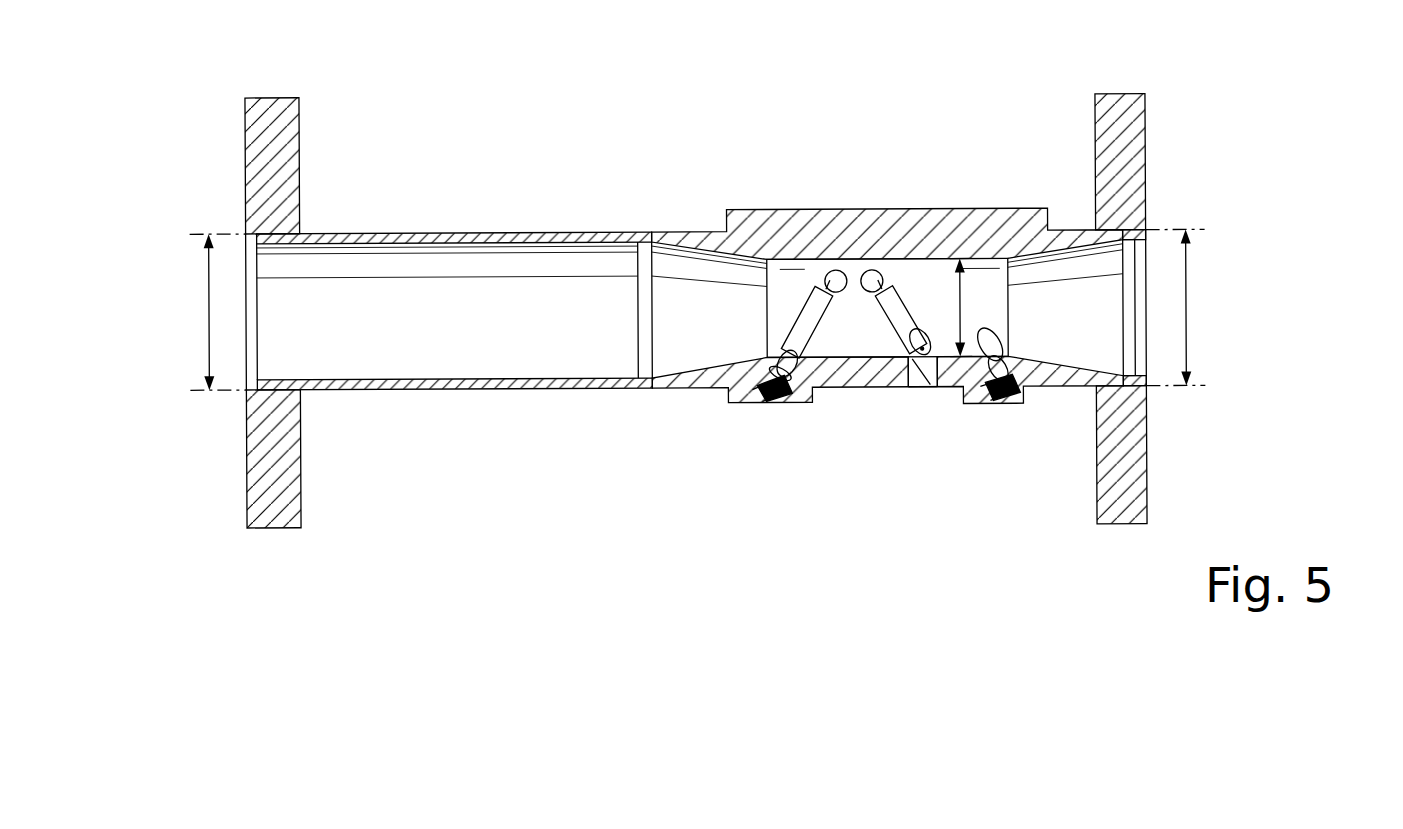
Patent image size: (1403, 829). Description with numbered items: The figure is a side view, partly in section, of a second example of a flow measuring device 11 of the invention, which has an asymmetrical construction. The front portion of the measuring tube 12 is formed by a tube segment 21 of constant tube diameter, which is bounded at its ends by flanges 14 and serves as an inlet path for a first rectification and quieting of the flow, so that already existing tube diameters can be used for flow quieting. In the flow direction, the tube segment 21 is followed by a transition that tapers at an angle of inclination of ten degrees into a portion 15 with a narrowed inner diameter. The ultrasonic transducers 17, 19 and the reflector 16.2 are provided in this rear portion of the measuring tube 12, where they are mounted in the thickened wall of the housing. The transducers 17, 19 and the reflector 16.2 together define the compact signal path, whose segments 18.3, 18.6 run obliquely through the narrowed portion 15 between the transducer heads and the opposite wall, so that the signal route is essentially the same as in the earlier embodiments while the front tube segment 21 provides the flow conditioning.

The flow measuring device 11 is at (647, 122).
The measuring tube 12 is at (745, 232).
The flange 14 is at (1145, 232).
The measuring section of reduced diameter 15 is at (857, 262).
The reflector 16.2 is at (921, 385).
The ultrasonic transducer 17 is at (1010, 405).
The ultrasonic transducer 18.3 is at (915, 300).
The ultrasonic transducer 18.6 is at (803, 282).
The ultrasonic transducer 19 is at (770, 398).
The tube segment 21 is at (463, 392).